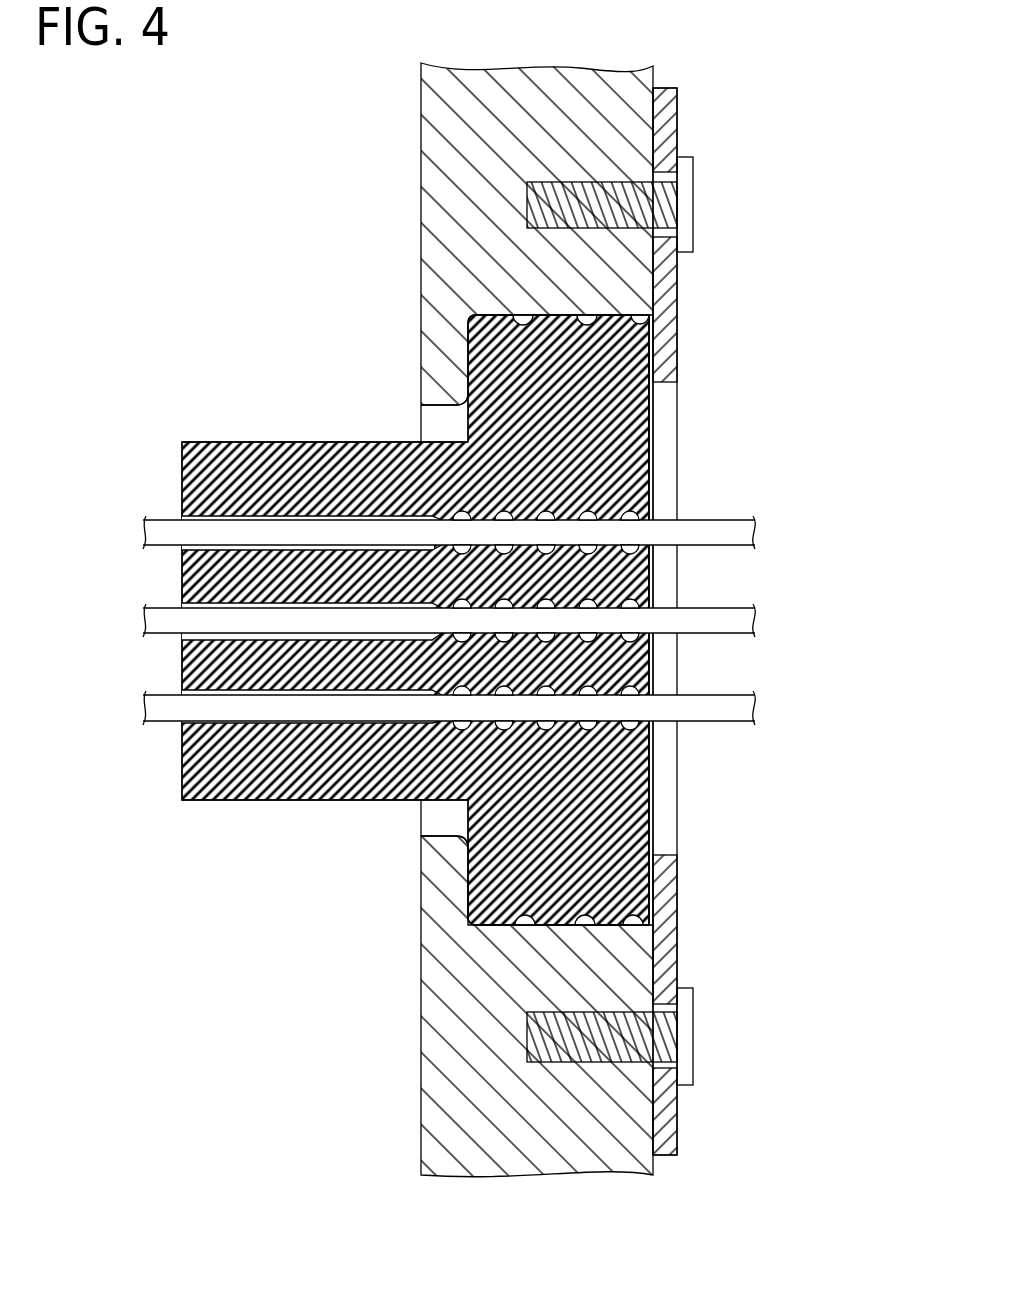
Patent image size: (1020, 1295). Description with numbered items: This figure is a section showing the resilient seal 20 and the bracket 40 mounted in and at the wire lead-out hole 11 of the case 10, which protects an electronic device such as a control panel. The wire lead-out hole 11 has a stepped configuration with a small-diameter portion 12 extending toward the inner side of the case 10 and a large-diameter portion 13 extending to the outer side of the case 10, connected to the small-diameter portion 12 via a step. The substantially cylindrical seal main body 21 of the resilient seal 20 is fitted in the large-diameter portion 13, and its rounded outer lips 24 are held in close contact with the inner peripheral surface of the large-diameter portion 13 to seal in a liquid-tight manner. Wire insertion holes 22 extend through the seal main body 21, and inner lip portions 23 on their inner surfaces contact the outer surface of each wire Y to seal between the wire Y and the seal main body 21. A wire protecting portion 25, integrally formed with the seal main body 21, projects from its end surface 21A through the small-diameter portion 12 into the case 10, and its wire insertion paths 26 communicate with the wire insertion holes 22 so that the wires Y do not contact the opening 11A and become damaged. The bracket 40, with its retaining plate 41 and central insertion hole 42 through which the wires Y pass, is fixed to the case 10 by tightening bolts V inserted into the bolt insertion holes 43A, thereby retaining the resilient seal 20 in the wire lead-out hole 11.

The case 10 is at (440, 188).
The wire lead-out hole 11 is at (537, 620).
The opening 11A is at (420, 836).
The small-diameter portion 12 is at (436, 414).
The large-diameter portion 13 is at (650, 327).
The resilient seal 20 is at (250, 432).
The seal main body 21 is at (620, 442).
The end surface 21A is at (467, 888).
The wire insertion hole 22 is at (655, 517).
The inner lip portion 23 is at (478, 530).
The outer lip 24 is at (556, 316).
The wire protecting portion 25 is at (279, 778).
The wire insertion path 26 is at (196, 557).
The bracket 40 is at (678, 1128).
The retaining plate 41 is at (666, 357).
The insertion hole 42 is at (669, 863).
The bolt insertion hole 43A is at (672, 181).
The tightening bolt V is at (691, 233).
The wire Y is at (165, 527).